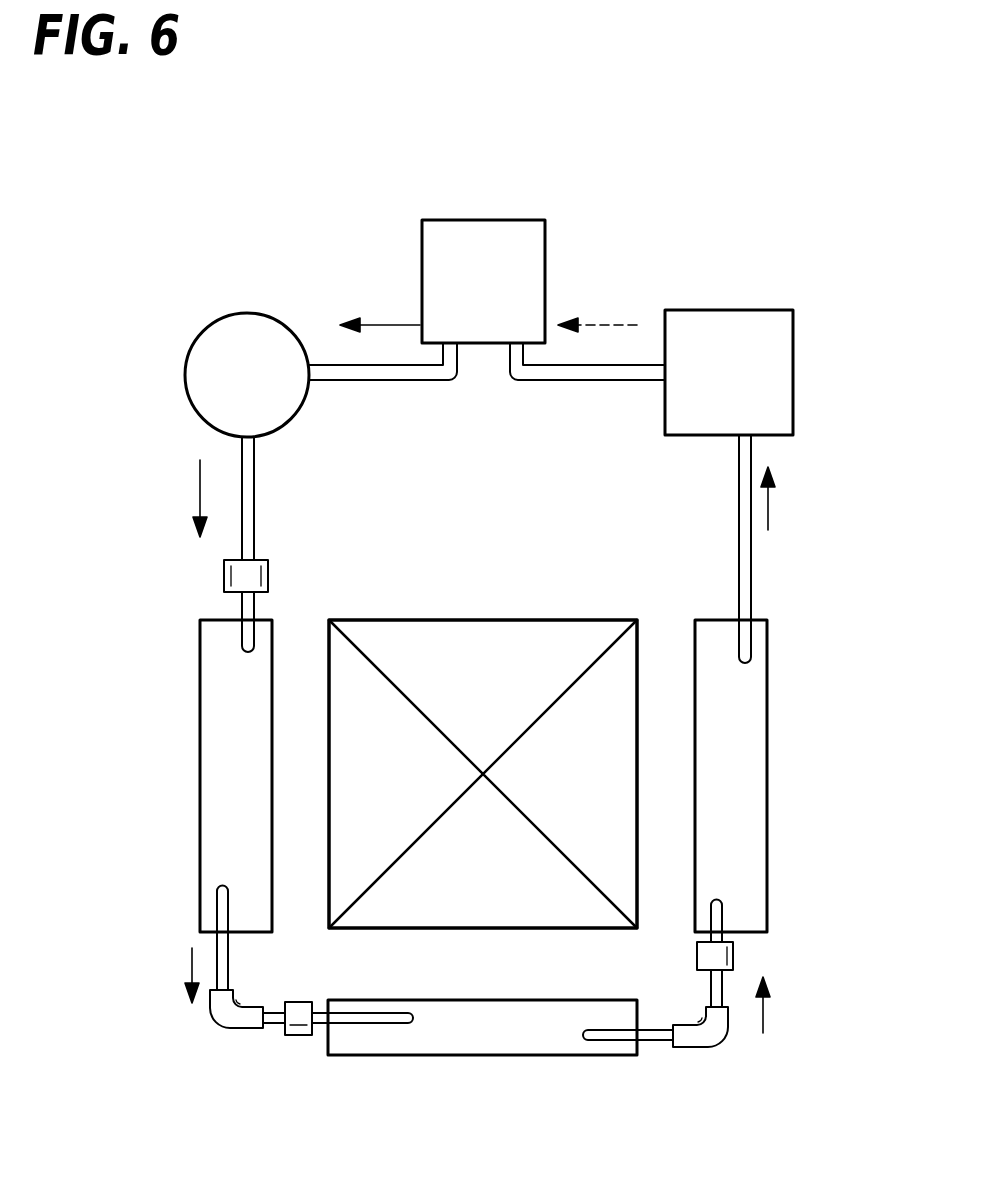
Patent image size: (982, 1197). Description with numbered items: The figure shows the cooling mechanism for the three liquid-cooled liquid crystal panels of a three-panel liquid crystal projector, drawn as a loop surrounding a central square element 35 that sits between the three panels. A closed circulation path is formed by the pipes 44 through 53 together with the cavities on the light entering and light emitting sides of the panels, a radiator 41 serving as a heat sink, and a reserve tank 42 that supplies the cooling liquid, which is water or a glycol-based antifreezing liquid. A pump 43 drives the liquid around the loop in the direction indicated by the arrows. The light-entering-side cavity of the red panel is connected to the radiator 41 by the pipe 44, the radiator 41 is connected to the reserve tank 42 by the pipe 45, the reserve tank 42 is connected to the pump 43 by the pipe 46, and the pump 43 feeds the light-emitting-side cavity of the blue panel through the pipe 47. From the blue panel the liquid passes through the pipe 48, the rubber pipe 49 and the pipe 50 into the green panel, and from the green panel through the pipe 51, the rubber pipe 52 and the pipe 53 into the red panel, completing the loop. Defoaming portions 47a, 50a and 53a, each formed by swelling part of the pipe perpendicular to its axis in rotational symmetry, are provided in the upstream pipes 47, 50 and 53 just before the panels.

The radiator 41 is at (722, 310).
The reserve tank 42 is at (500, 220).
The pump 43 is at (252, 313).
The pipe 44 is at (752, 555).
The pipe 45 is at (598, 382).
The pipe 46 is at (360, 382).
The pipe 47 is at (254, 497).
The defoaming portion 47a is at (268, 576).
The pipe 48 is at (228, 958).
The pipe 49 is at (210, 1020).
The pipe 50 is at (276, 1035).
The defoaming portion 50a is at (300, 1040).
The pipe 51 is at (653, 1045).
The pipe 52 is at (722, 1040).
The pipe 53 is at (711, 988).
The defoaming portion 53a is at (733, 956).
The cross dichroic prism 35 is at (460, 620).